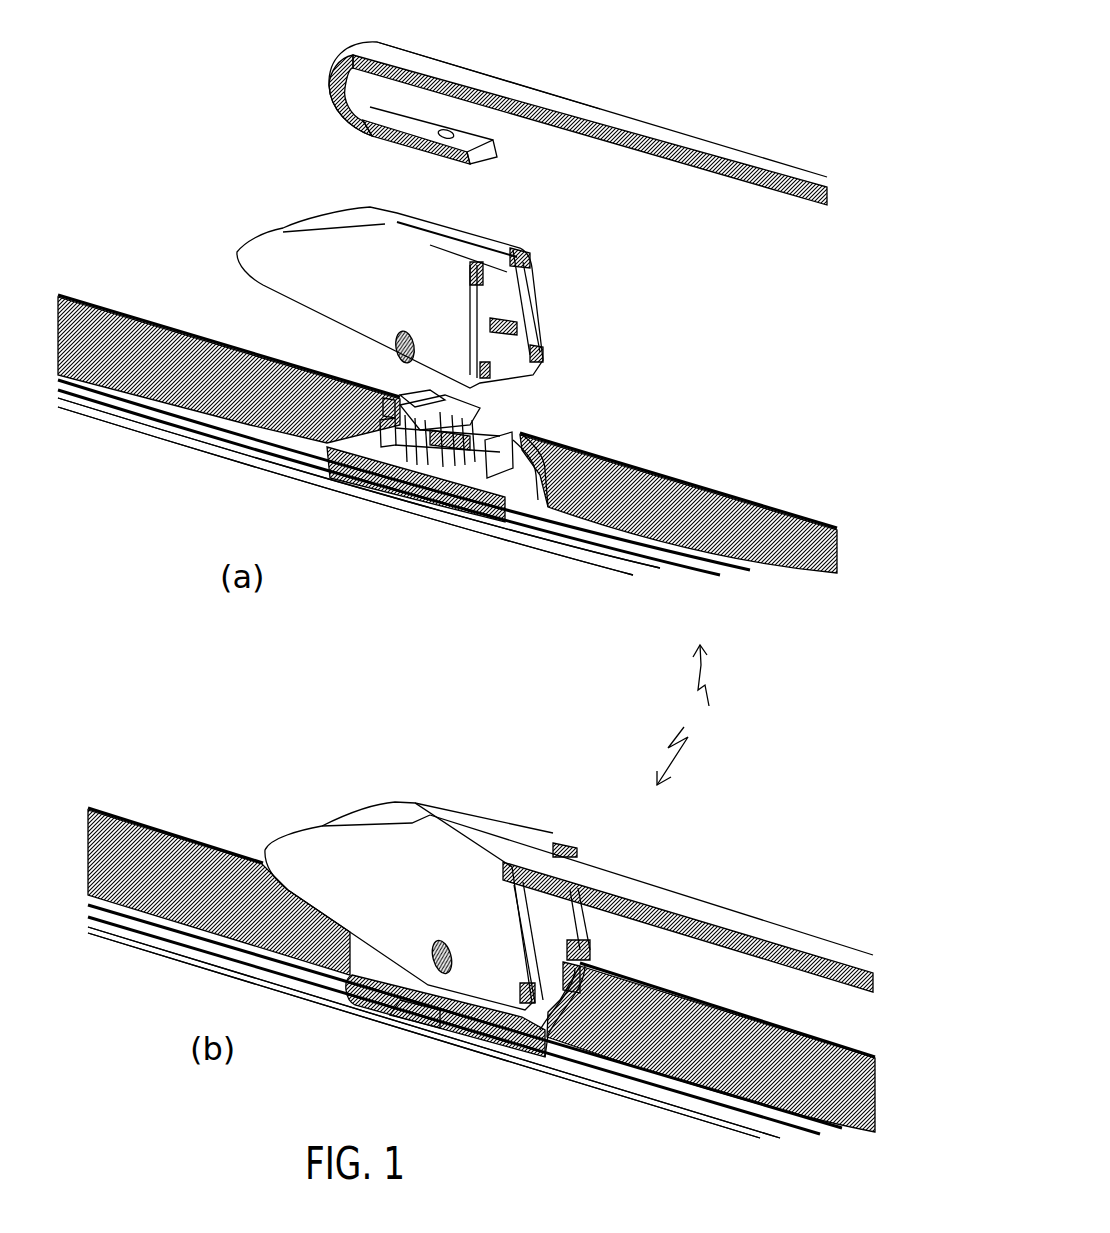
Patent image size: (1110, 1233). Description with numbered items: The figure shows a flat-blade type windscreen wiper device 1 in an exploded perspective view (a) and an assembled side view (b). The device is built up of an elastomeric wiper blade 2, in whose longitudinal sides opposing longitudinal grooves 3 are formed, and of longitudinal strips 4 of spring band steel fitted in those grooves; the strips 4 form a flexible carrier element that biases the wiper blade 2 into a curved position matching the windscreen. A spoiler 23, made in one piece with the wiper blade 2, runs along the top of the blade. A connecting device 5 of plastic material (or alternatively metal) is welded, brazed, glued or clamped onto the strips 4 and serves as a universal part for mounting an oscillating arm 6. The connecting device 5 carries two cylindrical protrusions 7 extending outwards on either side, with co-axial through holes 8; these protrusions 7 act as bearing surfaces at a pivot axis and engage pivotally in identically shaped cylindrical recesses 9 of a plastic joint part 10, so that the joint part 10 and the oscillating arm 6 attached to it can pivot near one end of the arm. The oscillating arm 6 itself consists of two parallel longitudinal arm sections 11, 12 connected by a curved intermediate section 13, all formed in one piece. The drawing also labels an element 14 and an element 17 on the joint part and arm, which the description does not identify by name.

The windscreen wiper device 1 is at (676, 715).
The wiper blade 2 is at (97, 420).
The longitudinal grooves 3 is at (267, 450).
The longitudinal strips 4 is at (582, 542).
The connecting device 5 is at (543, 410).
The oscillating arm 6 is at (757, 163).
The cylindrical protrusions 7 is at (473, 407).
The through holes 8 is at (530, 410).
The cylindrical recesses 9 is at (397, 350).
The joint part 10 is at (287, 250).
The longitudinal arm section 11 is at (437, 68).
The longitudinal arm section 12 is at (487, 157).
The curved intermediate section 13 is at (331, 91).
The stop 14 is at (520, 320).
The slot 17 is at (433, 153).
The spoiler 23 is at (102, 315).